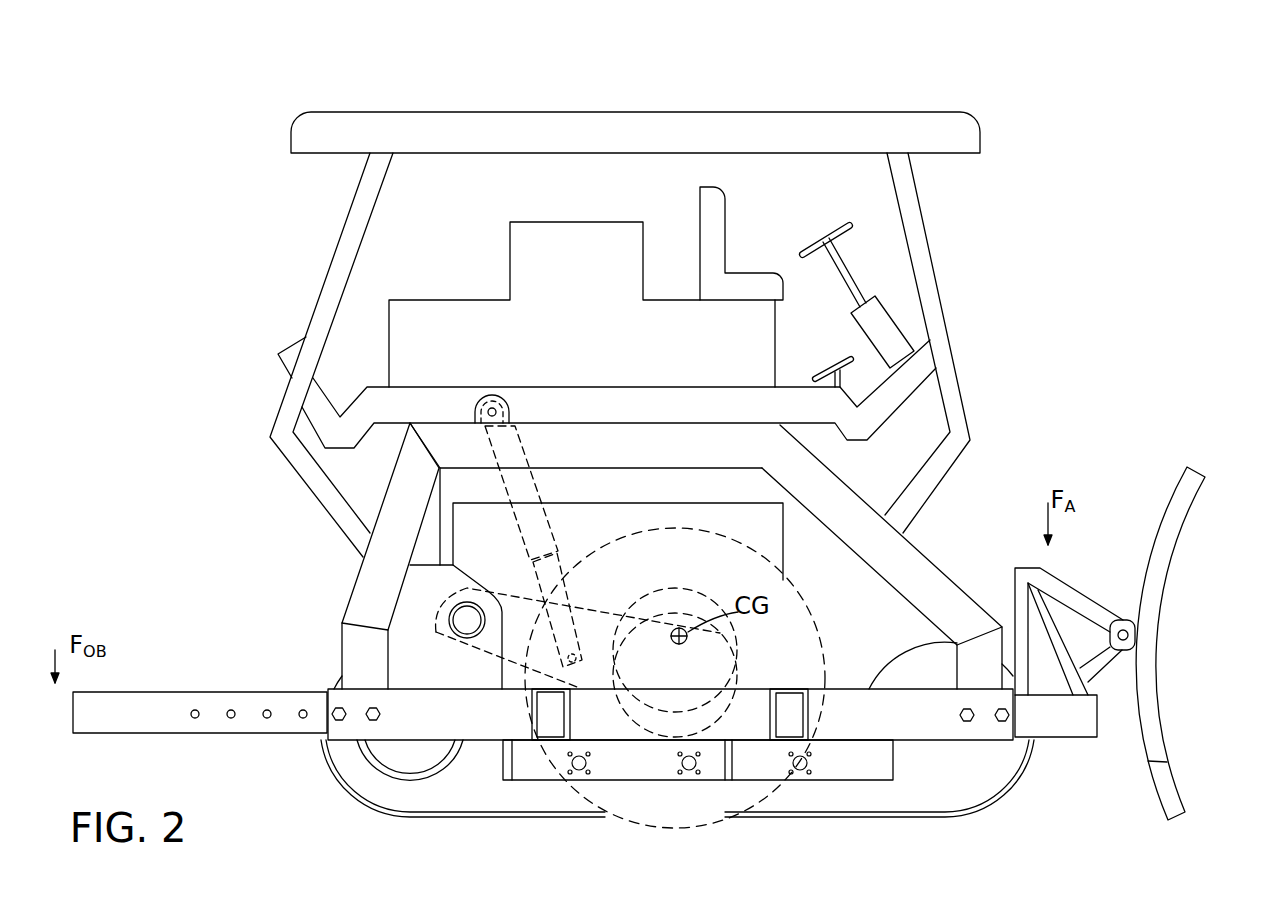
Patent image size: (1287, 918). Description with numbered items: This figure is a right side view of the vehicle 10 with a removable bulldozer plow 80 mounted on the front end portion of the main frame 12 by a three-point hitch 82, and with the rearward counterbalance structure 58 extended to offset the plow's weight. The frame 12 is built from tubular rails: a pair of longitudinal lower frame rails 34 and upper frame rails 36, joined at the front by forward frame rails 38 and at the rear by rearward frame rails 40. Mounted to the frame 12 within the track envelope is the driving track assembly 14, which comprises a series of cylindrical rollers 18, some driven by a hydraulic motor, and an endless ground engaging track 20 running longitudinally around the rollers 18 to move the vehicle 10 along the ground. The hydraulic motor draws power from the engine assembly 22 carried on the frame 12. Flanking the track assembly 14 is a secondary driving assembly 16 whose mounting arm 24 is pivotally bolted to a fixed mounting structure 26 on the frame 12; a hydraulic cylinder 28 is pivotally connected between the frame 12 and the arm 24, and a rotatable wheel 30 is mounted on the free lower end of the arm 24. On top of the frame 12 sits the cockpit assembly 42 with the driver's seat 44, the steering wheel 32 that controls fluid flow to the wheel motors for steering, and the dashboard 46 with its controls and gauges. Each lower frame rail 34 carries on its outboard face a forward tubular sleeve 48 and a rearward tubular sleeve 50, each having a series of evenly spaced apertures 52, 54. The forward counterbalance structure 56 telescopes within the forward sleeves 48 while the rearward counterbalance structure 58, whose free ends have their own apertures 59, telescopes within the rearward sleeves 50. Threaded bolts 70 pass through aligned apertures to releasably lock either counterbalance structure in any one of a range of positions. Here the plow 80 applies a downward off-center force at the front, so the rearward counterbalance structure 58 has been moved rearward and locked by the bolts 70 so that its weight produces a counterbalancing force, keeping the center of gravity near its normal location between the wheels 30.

The vehicle 10 is at (200, 115).
The main frame 12 is at (993, 392).
The driving track assembly 14 is at (340, 810).
The secondary driving assembly 16 is at (848, 607).
The cylindrical rollers 18 is at (432, 793).
The endless ground engaging track 20 is at (1030, 768).
The engine assembly 22 is at (430, 522).
The mounting arm 24 is at (596, 630).
The fixed mounting structure 26 is at (505, 405).
The hydraulic cylinder 28 is at (527, 487).
The rotatable wheel 30 is at (703, 555).
The steering wheel 32 is at (845, 226).
The lower frame rails 34 is at (748, 730).
The upper frame rails 36 is at (676, 432).
The forward frame rails 38 is at (905, 540).
The rearward frame rails 40 is at (373, 573).
The cockpit assembly 42 is at (828, 95).
The seat 44 is at (722, 220).
The dashboard 46 is at (888, 316).
The forward tubular sleeve 48 is at (869, 725).
The rearward tubular sleeve 50 is at (475, 728).
The apertures 52 is at (975, 738).
The apertures 54 is at (378, 710).
The forward counterbalance structure 56 is at (1077, 725).
The rearward counterbalance structure 58 is at (128, 702).
The apertures 59 is at (265, 720).
The threaded bolts 70 is at (372, 722).
The bulldozer plow 80 is at (1178, 587).
The three-point hitch 82 is at (1083, 570).